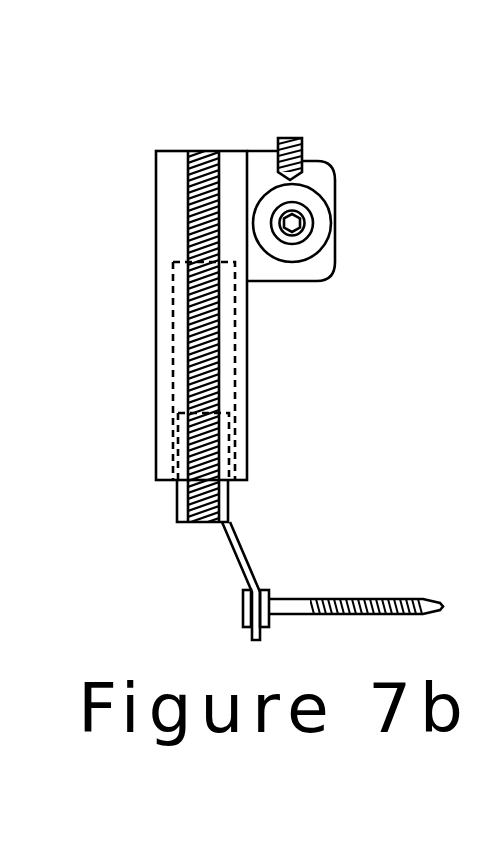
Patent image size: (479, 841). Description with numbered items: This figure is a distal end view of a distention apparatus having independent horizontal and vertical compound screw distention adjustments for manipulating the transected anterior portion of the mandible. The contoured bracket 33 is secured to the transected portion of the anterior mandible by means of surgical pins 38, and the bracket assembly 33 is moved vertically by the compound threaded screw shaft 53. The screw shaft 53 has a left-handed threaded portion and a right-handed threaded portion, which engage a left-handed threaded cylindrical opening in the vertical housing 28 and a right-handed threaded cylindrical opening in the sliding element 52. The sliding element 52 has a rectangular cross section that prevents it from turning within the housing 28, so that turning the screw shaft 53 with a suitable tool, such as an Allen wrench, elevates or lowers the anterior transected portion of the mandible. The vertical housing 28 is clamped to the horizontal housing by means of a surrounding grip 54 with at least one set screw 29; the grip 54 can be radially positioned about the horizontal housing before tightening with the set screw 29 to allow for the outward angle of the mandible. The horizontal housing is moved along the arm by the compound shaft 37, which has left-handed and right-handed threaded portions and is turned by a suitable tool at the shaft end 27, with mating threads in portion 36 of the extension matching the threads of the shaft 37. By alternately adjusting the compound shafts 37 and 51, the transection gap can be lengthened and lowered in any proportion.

The vertical housing 28 is at (155, 153).
The compound threaded screw shaft 53 is at (205, 152).
The compound shaft 51 is at (212, 392).
The sliding element 52 is at (178, 507).
The portion of extension 36 is at (338, 202).
The surrounding grip 54 is at (290, 281).
The set screw 29 is at (293, 139).
The compound shaft 37 is at (302, 233).
The shaft end 27 is at (300, 226).
The contoured bracket 33 is at (247, 547).
The surgical pin 38 is at (327, 600).